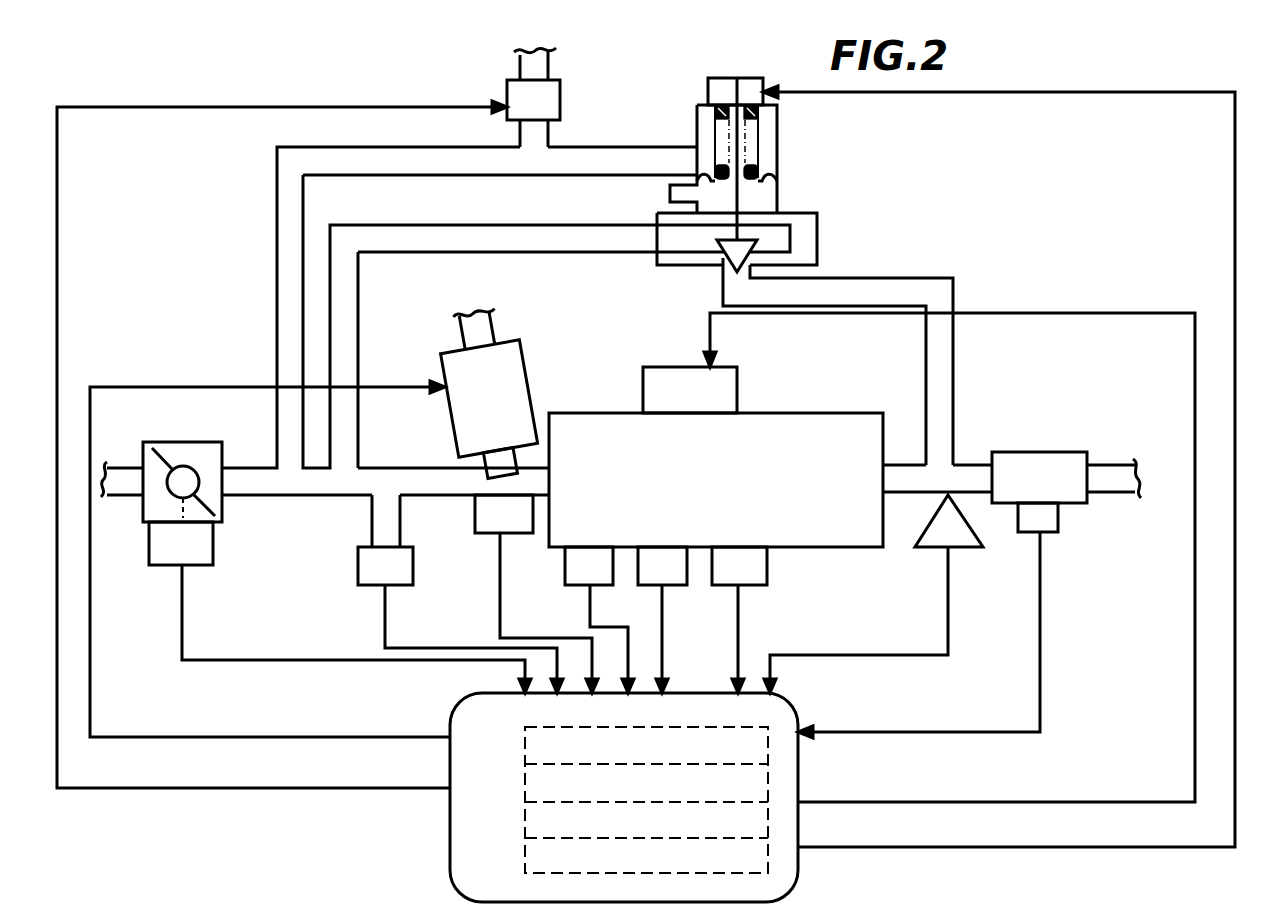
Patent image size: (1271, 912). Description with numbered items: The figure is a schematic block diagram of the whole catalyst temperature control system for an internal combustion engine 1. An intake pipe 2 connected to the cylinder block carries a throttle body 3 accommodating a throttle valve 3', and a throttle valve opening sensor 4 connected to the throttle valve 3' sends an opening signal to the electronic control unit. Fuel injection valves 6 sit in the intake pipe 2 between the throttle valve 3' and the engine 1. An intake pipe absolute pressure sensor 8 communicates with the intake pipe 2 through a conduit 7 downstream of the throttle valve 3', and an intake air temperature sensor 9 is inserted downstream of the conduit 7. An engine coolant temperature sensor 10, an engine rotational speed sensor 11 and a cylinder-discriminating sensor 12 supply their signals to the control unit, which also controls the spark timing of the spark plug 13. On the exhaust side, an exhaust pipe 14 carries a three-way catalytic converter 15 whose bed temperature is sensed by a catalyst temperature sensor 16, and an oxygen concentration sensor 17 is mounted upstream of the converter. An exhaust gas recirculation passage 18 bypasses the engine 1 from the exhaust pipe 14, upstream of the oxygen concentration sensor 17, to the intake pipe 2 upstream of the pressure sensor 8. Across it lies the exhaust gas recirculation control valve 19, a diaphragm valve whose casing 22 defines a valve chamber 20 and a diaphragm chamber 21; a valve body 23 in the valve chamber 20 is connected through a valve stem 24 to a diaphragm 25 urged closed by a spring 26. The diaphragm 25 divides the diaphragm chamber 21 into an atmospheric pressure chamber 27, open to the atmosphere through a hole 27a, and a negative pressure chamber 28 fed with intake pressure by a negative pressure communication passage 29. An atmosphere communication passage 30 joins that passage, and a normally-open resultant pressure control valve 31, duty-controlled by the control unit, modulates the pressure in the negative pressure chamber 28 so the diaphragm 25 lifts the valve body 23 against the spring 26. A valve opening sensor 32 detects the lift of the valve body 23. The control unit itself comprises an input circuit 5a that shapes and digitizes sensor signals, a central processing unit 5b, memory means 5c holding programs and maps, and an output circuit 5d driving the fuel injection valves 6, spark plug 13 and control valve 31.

The internal combustion engine 1 is at (806, 412).
The intake pipe 2 is at (393, 468).
The throttle body 3 is at (204, 462).
The throttle valve 3' is at (183, 460).
The throttle valve opening sensor 4 is at (213, 550).
The input circuit 5a is at (768, 727).
The central processing unit 5b is at (768, 764).
The memory means 5c is at (768, 838).
The output circuit 5d is at (768, 873).
The fuel injection valve 6 is at (528, 370).
The conduit 7 is at (405, 520).
The intake pipe absolute pressure sensor 8 is at (413, 570).
The intake air temperature sensor 9 is at (505, 535).
The engine coolant temperature sensor 10 is at (595, 587).
The engine rotational speed sensor 11 is at (665, 587).
The cylinder-discriminating sensor 12 is at (748, 587).
The spark plug 13 is at (648, 367).
The exhaust pipe 14 is at (900, 495).
The catalytic converter 15 is at (1005, 452).
The catalyst temperature sensor 16 is at (1045, 532).
The oxygen concentration sensor 17 is at (975, 547).
The exhaust gas recirculation passage 18 is at (485, 225).
The exhaust gas recirculation control valve 19 is at (770, 251).
The valve chamber 20 is at (817, 238).
The diaphragm chamber 21 is at (777, 135).
The casing 22 is at (718, 262).
The valve body 23 is at (790, 252).
The valve stem 24 is at (712, 225).
The diaphragm 25 is at (760, 170).
The spring 26 is at (760, 112).
The atmospheric pressure chamber 27 is at (700, 200).
The hole 27a is at (670, 194).
The negative pressure chamber 28 is at (697, 110).
The negative pressure communication passage 29 is at (600, 147).
The atmosphere communication passage 30 is at (562, 122).
The resultant pressure control valve 31 is at (560, 80).
The valve opening sensor 32 is at (740, 78).